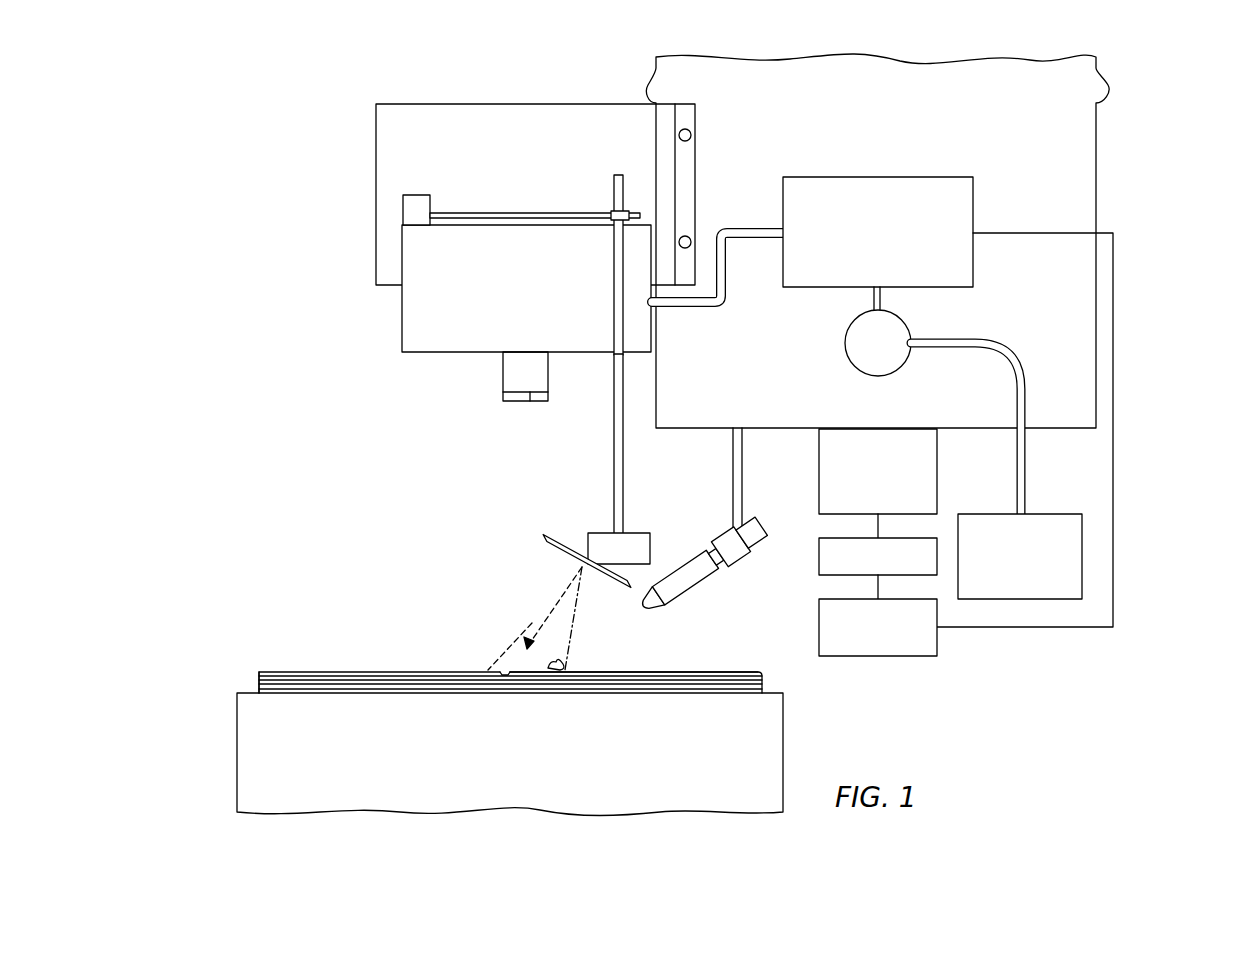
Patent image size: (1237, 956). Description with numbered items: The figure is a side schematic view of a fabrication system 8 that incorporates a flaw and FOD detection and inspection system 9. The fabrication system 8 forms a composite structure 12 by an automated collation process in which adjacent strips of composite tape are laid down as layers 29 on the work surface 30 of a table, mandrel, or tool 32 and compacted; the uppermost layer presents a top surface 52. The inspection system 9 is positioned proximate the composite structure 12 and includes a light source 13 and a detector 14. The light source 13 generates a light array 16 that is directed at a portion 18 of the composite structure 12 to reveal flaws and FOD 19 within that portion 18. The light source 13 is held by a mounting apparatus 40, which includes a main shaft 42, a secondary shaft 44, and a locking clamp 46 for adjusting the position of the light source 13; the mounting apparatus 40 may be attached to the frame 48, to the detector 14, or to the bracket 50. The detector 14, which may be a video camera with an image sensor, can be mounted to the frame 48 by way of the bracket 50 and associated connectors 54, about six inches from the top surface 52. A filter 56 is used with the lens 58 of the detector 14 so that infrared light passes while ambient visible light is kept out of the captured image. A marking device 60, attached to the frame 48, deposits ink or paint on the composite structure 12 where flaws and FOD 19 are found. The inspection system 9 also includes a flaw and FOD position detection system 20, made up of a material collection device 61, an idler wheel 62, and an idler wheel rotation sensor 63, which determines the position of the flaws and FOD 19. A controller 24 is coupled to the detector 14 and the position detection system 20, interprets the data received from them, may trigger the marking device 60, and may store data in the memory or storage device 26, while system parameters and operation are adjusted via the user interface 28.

The fabrication system 8 is at (1189, 259).
The flaw and FOD detection and inspection system 9 is at (421, 517).
The composite structure 12 is at (765, 673).
The light source 13 is at (640, 533).
The detector 14 is at (441, 353).
The light array 16 is at (580, 605).
The portion 18 is at (522, 633).
The flaws and FOD 19 is at (501, 670).
The flaw and FOD position detection system 20 is at (1001, 693).
The controller 24 is at (948, 177).
The memory or storage device 26 is at (846, 357).
The user interface 28 is at (1057, 513).
The layers 29 is at (313, 672).
The work surface 30 is at (251, 692).
The tool 32 is at (236, 758).
The mounting apparatus 40 is at (613, 494).
The main shaft 42 is at (612, 317).
The secondary shaft 44 is at (470, 213).
The locking clamp 46 is at (610, 213).
The frame 48 is at (1098, 152).
The bracket 50 is at (470, 104).
The top surface 52 is at (645, 671).
The connectors 54 is at (698, 119).
The filter 56 is at (515, 403).
The lens 58 is at (532, 402).
The marking device 60 is at (695, 590).
The material collection device 61 is at (818, 472).
The idler wheel 62 is at (818, 557).
The idler wheel rotation sensor 63 is at (818, 628).